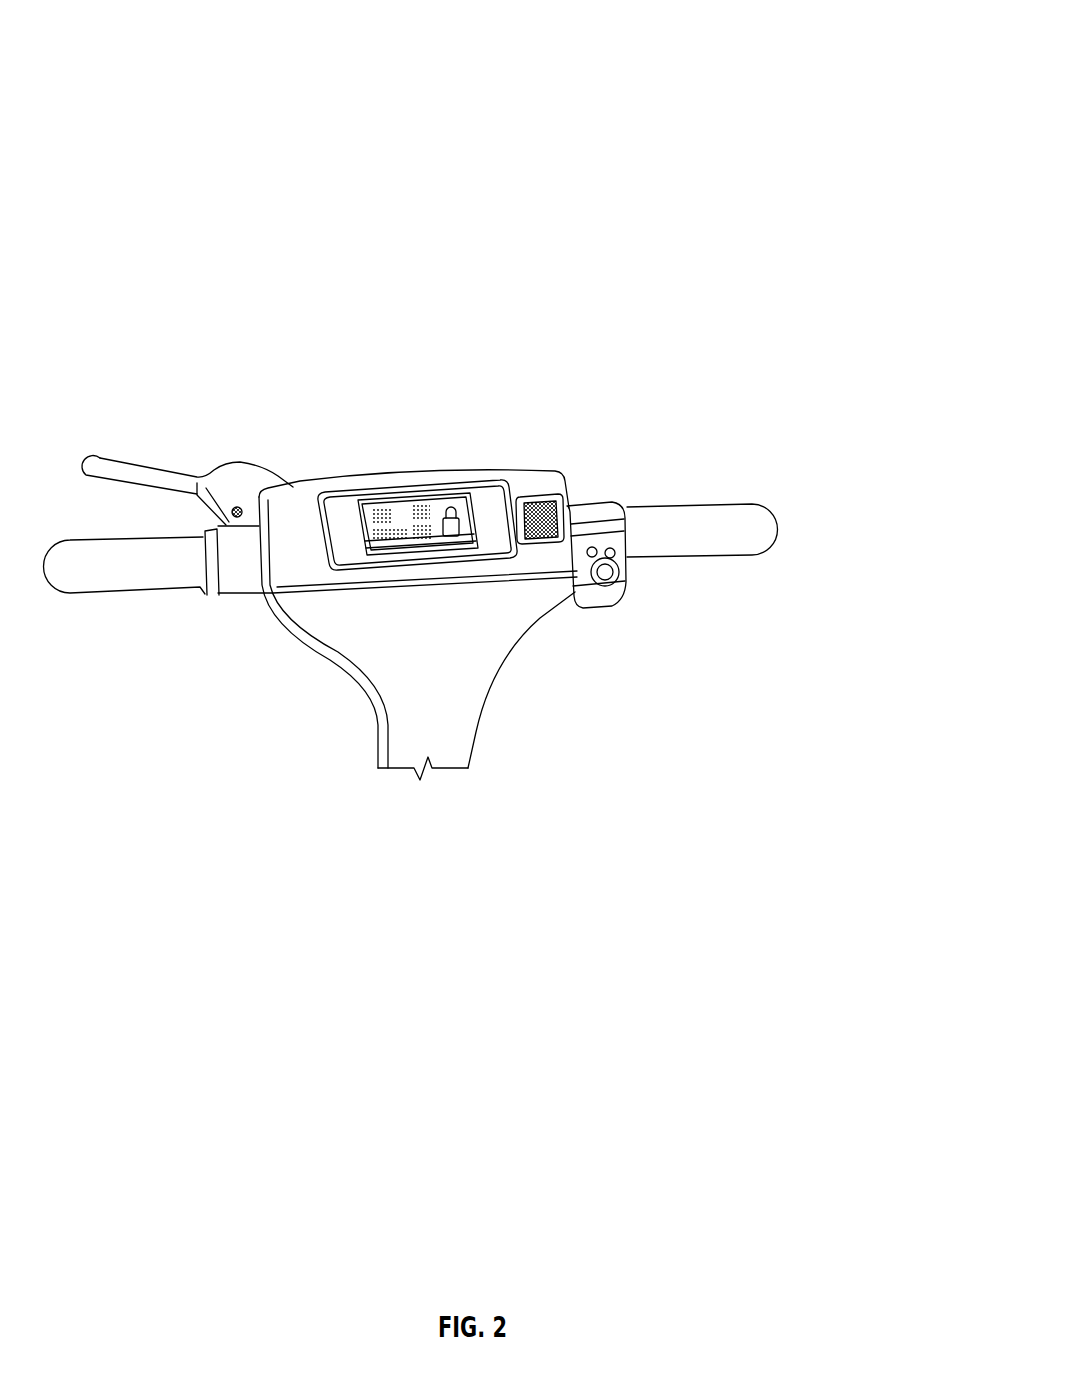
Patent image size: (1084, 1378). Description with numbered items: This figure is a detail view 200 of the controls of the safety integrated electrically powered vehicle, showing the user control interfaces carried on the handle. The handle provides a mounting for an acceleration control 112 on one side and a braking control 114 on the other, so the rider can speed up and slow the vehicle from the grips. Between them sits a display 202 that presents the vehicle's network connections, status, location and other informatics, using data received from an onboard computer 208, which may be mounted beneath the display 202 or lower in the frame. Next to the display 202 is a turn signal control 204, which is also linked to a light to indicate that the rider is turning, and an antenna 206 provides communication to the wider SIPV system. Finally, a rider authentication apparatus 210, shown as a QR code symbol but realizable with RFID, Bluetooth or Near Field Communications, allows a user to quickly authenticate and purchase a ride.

The handlebar assembly 200 is at (877, 78).
The acceleration control 112 is at (650, 513).
The braking control 114 is at (180, 468).
The display 202 is at (400, 513).
The turn signal control 204 is at (600, 517).
The antenna 206 is at (432, 562).
The onboard computer 208 is at (308, 566).
The rider authentication apparatus 210 is at (533, 503).